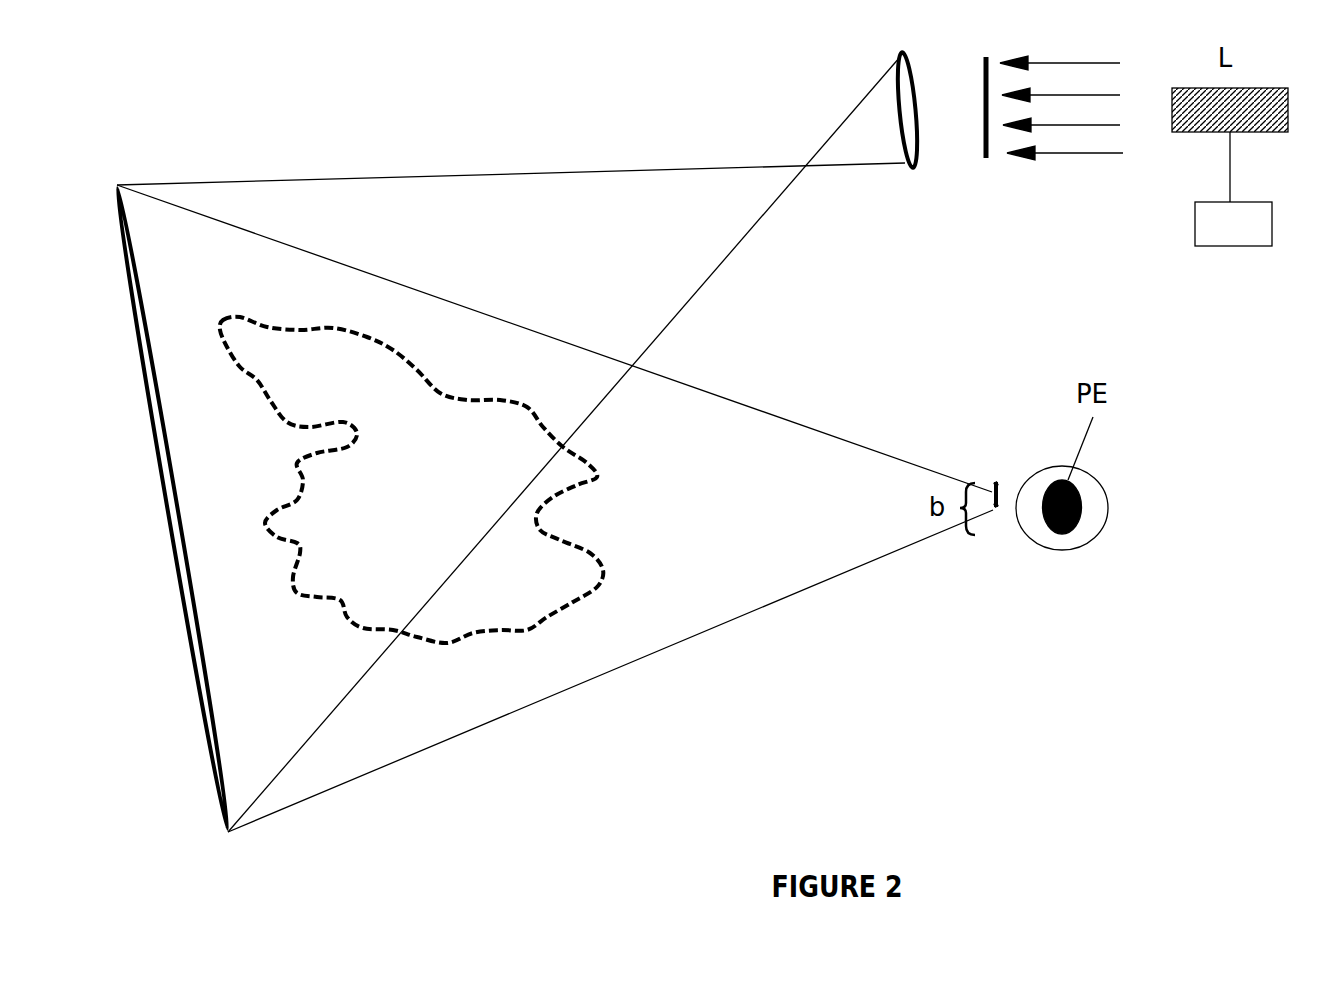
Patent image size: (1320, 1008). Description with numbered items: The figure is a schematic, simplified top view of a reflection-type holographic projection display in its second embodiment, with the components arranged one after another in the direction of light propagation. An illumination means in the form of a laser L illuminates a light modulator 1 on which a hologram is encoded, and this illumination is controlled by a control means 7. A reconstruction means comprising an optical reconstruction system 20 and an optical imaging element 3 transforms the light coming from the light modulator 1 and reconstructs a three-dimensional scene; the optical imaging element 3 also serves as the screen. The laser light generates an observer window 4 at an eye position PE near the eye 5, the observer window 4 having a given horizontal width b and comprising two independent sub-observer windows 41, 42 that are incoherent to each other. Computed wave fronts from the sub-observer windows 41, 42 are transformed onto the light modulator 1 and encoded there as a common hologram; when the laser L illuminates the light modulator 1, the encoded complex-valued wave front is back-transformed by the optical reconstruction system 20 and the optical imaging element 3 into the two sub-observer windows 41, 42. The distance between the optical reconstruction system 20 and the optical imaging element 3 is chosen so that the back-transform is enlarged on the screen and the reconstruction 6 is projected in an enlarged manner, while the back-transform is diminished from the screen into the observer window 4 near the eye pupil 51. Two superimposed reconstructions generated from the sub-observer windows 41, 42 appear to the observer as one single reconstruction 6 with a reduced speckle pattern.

The light modulator 1 is at (978, 145).
The optical imaging element 3 is at (118, 185).
The observer window 4 is at (1003, 523).
The eye 5 is at (1082, 484).
The reconstruction 6 is at (468, 603).
The control means 7 is at (1235, 232).
The optical reconstruction system 20 is at (900, 153).
The sub-observer window 41 is at (990, 523).
The sub-observer window 42 is at (993, 485).
The eye pupil 51 is at (1080, 517).